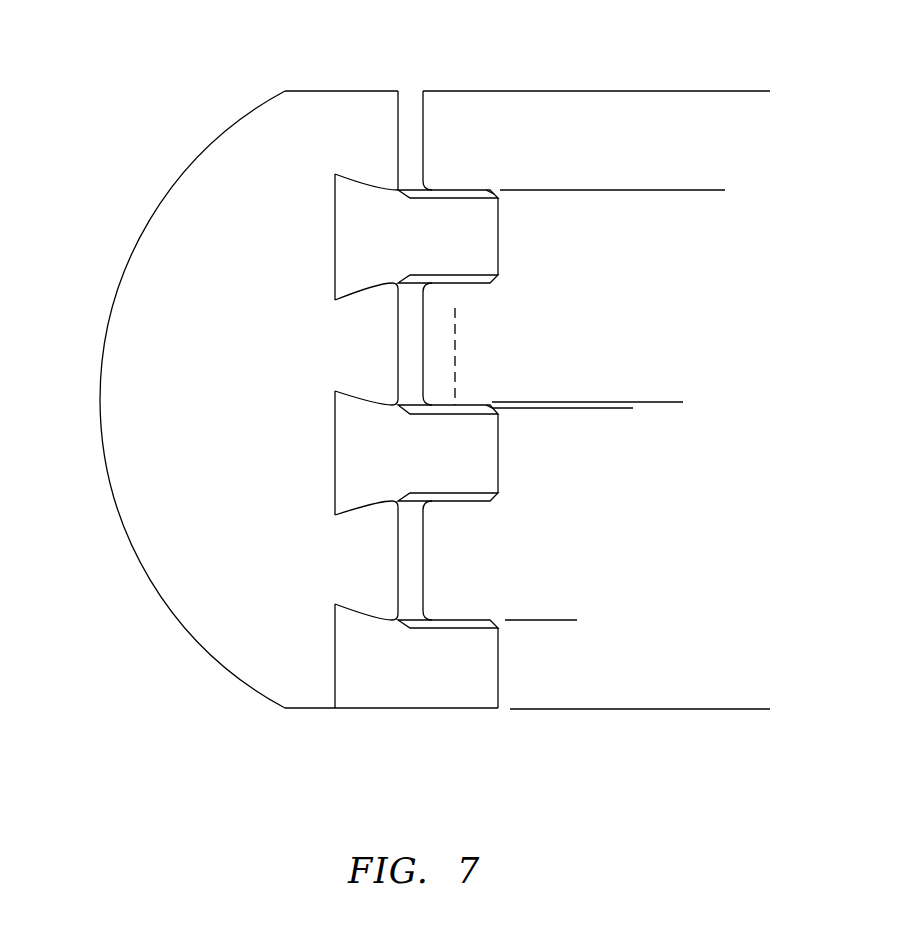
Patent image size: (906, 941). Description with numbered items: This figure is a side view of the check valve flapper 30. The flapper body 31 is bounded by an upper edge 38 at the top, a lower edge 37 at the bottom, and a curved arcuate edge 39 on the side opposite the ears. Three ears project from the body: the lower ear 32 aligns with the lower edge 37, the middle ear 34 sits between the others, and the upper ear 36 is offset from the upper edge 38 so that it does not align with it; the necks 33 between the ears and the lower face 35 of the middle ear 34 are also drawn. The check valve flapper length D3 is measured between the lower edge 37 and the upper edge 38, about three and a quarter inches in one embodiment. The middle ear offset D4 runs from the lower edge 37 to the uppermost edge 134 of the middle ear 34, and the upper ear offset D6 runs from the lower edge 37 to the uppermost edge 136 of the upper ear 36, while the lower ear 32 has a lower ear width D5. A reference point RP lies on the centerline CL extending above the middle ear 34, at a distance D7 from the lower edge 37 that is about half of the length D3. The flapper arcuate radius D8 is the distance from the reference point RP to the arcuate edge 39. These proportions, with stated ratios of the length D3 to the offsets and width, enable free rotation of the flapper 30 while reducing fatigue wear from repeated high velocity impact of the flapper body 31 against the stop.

The check valve flapper 30 is at (258, 406).
The flapper body 31 is at (218, 650).
The lower ear 32 is at (430, 701).
The neck / groove between teeth 33 is at (448, 186).
The middle ear 34 is at (464, 465).
The lower bearing surface of middle tooth 35 is at (470, 504).
The upper ear 36 is at (466, 206).
The lower edge 37 is at (310, 713).
The upper edge 38 is at (338, 91).
The arcuate edge 39 is at (118, 282).
The uppermost edge of the middle ear 134 is at (477, 404).
The uppermost edge of the upper ear 136 is at (486, 187).
The centerline CL is at (455, 327).
The reference point RP is at (451, 402).
The check valve flapper length D3 is at (763, 91).
The middle ear offset D4 is at (623, 408).
The lower ear width D5 is at (570, 620).
The upper ear offset D6 is at (718, 709).
The distance D7 is at (674, 709).
The flapper arcuate radius D8 is at (452, 401).